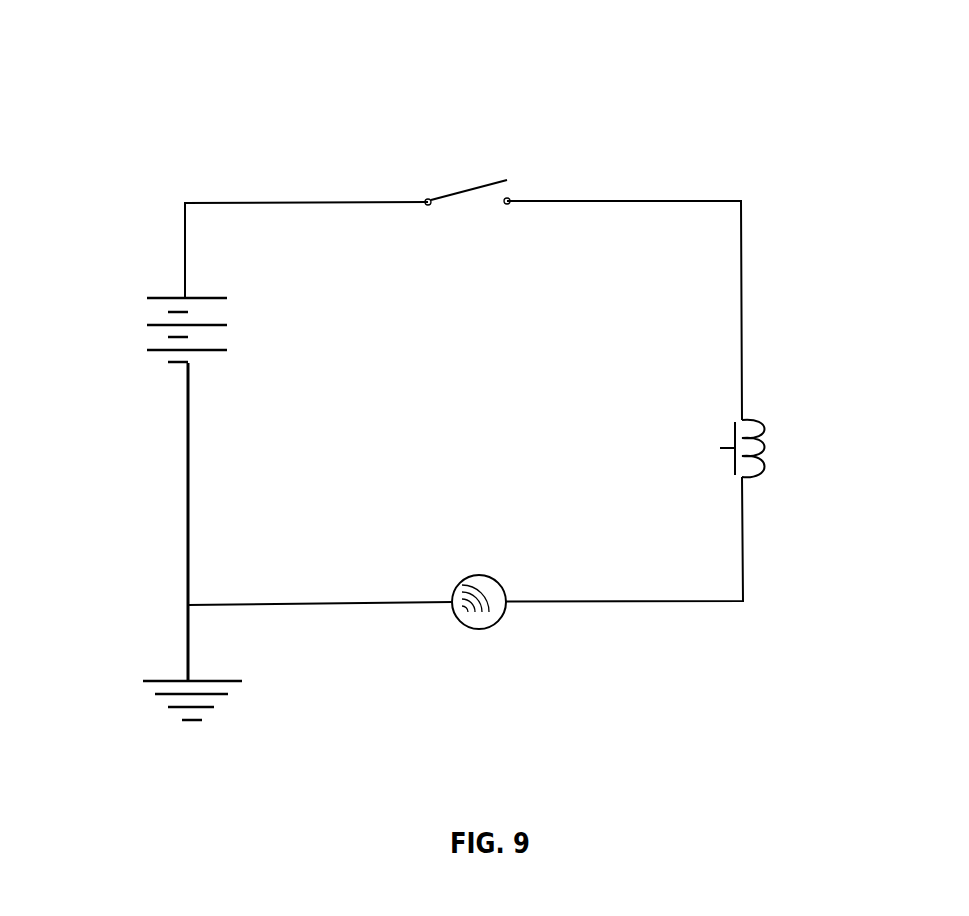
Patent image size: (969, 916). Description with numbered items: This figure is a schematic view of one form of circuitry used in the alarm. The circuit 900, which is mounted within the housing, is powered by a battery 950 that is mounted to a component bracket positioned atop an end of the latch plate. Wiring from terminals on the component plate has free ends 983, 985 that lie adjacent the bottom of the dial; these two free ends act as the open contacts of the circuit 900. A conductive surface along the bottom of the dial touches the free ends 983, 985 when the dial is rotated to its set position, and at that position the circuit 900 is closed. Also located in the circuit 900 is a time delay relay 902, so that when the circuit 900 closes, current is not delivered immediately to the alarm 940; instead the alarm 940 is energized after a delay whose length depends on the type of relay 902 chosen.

The circuit 900 is at (550, 87).
The battery 950 is at (155, 337).
The free end 983 is at (417, 212).
The free end 985 is at (509, 203).
The time delay relay 902 is at (780, 455).
The alarm 940 is at (480, 629).